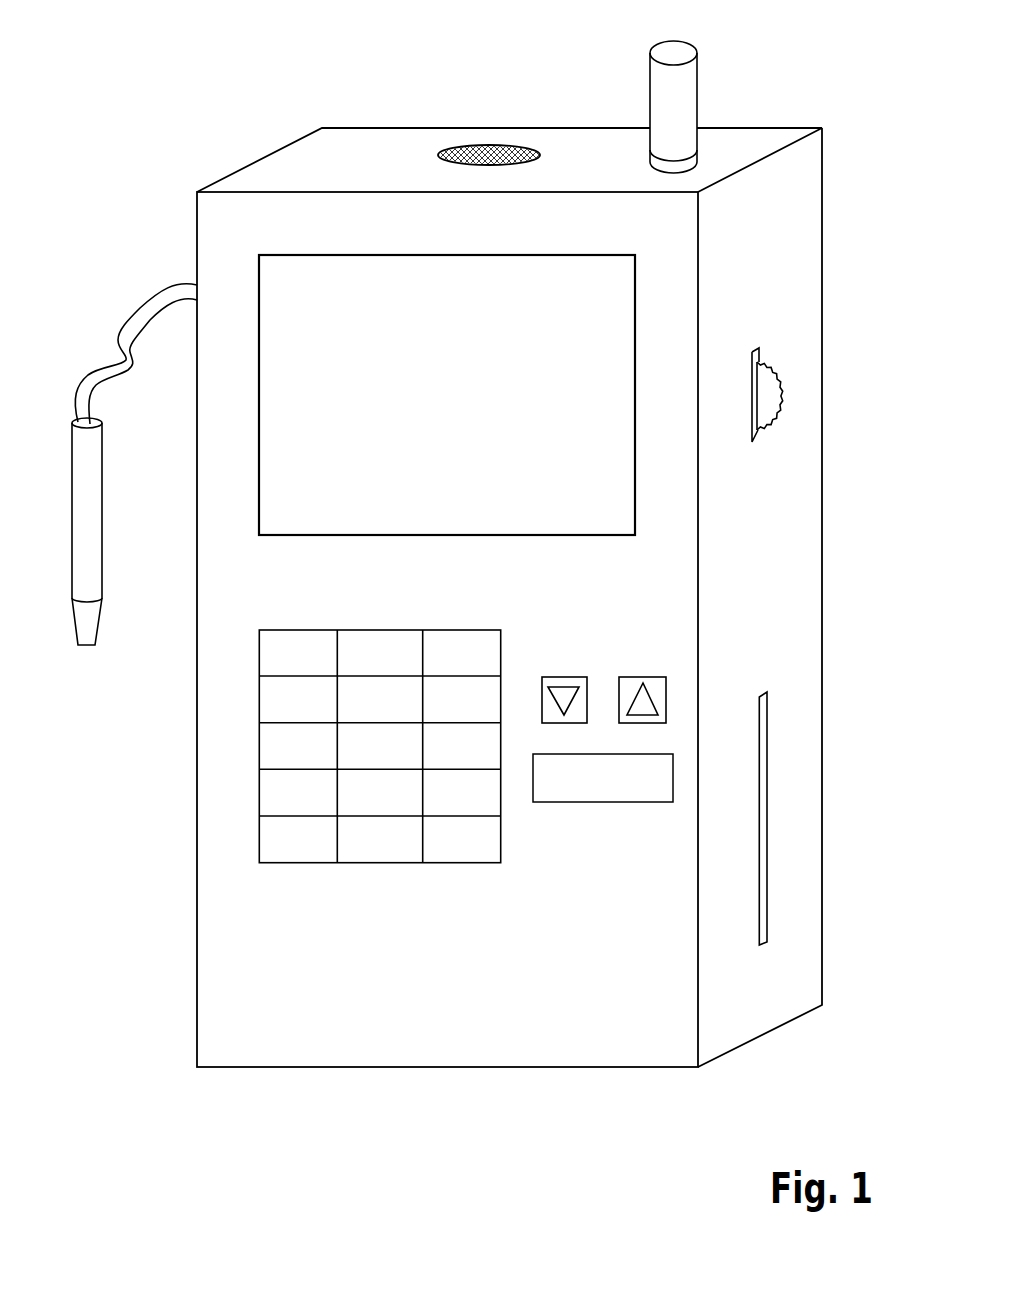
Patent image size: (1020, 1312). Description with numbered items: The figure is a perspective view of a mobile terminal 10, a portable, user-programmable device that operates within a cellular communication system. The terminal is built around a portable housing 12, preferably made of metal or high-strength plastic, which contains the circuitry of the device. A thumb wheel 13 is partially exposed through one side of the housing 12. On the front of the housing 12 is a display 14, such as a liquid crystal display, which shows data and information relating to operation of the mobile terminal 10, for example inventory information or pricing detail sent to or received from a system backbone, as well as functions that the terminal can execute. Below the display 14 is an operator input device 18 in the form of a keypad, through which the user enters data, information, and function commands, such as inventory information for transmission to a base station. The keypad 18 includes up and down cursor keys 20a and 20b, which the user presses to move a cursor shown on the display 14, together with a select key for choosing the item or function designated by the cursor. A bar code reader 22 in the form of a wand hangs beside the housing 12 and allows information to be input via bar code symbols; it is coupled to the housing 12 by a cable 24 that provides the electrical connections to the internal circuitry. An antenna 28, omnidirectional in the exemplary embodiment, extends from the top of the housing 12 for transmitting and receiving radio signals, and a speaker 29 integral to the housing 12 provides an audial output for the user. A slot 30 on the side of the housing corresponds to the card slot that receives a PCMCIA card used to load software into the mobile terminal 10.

The mobile terminal 10 is at (483, 579).
The portable housing 12 is at (196, 989).
The thumb wheel 13 is at (766, 410).
The display 14 is at (556, 536).
The operator input device 18 is at (337, 912).
The up cursor key 20a is at (567, 688).
The down cursor key 20b is at (645, 686).
The bar code reader 22 is at (87, 535).
The cable 24 is at (141, 308).
The antenna 28 is at (682, 97).
The speaker 29 is at (507, 152).
The card slot 30 is at (762, 870).